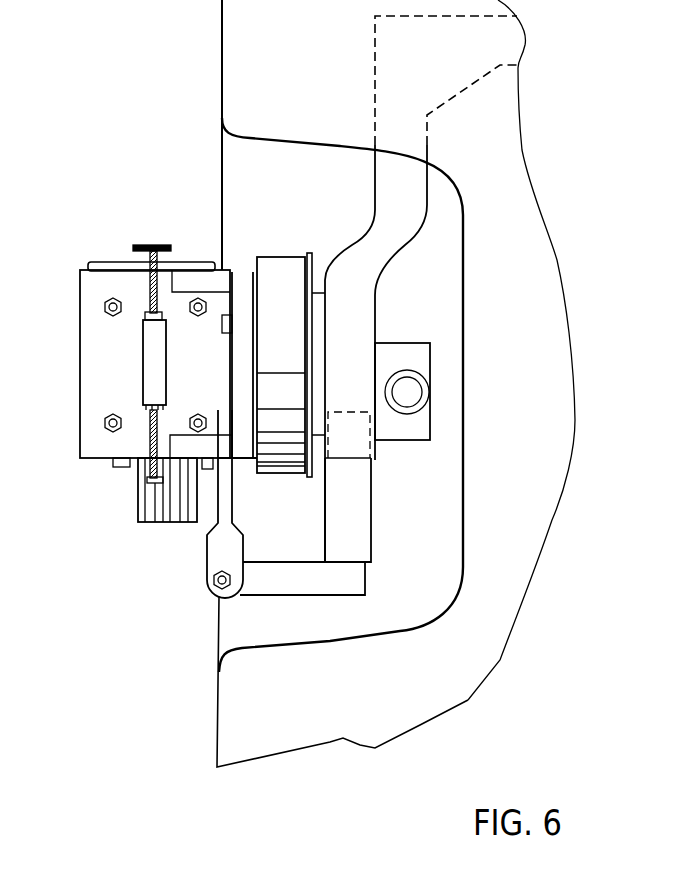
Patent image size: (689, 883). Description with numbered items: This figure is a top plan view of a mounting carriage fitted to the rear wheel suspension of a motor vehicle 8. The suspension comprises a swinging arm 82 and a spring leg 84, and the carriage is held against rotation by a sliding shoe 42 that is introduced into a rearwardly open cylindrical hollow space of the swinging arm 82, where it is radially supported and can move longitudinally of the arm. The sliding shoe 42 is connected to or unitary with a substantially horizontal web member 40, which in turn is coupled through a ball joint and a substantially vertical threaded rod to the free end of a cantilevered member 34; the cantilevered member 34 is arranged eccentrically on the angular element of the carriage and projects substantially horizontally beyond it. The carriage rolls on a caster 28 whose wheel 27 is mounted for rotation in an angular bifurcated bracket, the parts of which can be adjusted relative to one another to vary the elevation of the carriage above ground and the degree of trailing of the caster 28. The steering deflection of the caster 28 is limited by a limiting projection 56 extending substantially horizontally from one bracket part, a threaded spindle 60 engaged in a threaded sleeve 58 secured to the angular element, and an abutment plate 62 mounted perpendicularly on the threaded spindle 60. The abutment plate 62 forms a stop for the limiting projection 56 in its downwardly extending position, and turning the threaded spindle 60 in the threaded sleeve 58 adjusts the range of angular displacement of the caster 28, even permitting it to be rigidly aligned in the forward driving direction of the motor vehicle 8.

The motor vehicle 8 is at (547, 253).
The wheel 27 is at (155, 495).
The caster 28 is at (148, 525).
The cantilevered member 34 is at (223, 543).
The web member 40 is at (290, 577).
The sliding shoe 42 is at (348, 508).
The limiting projection 56 is at (198, 264).
The threaded sleeve 58 is at (157, 355).
The threaded spindle 60 is at (150, 256).
The abutment plate 62 is at (153, 245).
The swinging arm 82 is at (348, 327).
The spring leg 84 is at (413, 392).